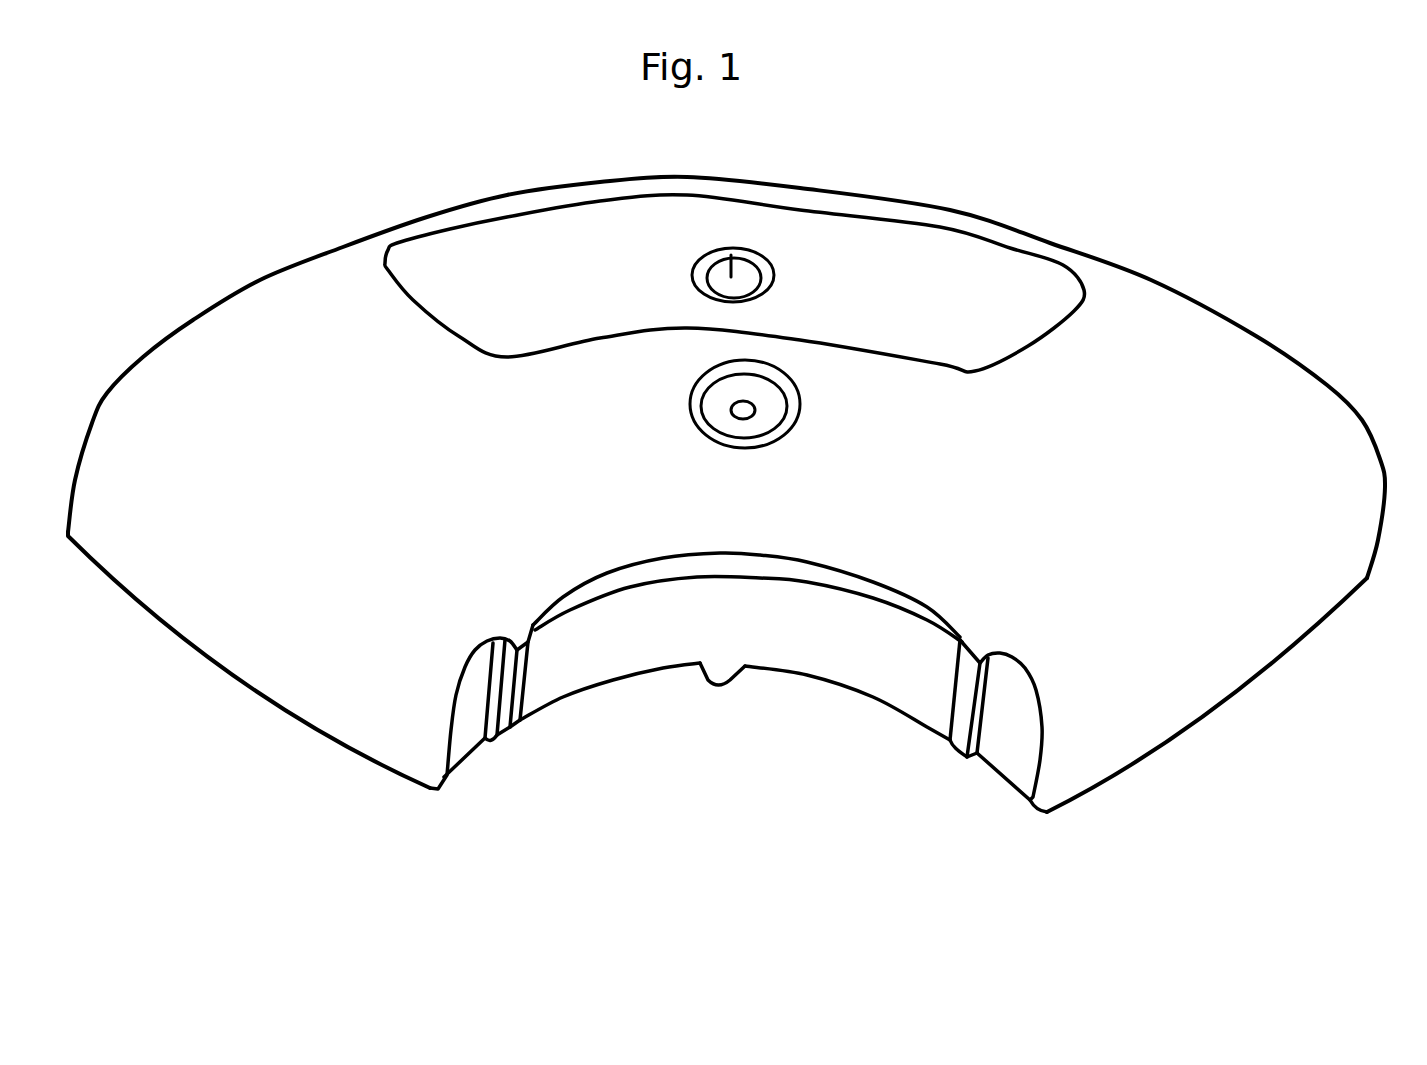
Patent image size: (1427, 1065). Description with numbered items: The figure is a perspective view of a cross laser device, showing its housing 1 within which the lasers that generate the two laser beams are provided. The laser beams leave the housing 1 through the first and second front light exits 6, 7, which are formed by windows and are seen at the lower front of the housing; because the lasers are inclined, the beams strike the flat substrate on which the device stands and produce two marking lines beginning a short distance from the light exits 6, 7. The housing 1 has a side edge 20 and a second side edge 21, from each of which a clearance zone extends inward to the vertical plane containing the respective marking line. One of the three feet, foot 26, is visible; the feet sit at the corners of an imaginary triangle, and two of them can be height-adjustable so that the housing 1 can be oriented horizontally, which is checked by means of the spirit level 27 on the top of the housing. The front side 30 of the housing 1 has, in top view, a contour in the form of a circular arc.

The housing 1 is at (1147, 306).
The first front light exit 6 is at (1023, 718).
The second front light exit 7 is at (473, 709).
The side edge 20 is at (1227, 650).
The second side edge 21 is at (200, 626).
The foot 26 is at (718, 675).
The spirit level 27 is at (750, 390).
The front side 30 is at (797, 650).